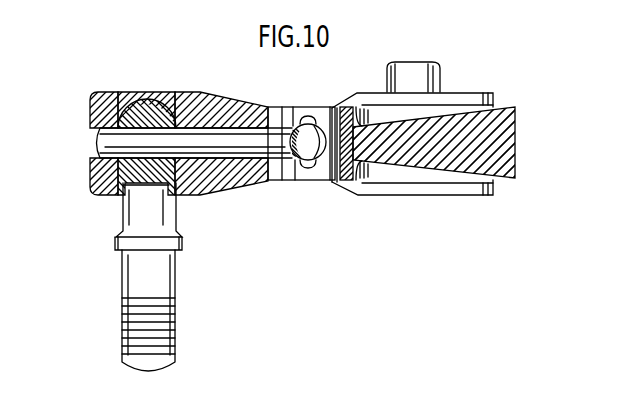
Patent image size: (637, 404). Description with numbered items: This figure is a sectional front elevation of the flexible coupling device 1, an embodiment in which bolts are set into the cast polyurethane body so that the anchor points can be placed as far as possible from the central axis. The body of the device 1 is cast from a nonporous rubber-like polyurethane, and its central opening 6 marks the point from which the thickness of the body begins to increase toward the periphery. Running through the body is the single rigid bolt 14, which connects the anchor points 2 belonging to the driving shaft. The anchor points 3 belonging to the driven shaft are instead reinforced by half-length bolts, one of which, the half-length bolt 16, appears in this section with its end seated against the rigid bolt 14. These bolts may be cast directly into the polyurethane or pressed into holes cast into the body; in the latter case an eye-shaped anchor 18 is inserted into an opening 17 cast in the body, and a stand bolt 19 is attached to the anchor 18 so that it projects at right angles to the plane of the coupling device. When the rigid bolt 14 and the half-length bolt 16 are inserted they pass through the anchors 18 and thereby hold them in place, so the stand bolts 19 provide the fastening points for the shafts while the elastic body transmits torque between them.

The flexible coupling device 1 is at (516, 143).
The anchor points for the driving shaft 2 is at (90, 106).
The anchor points for the driven shaft 3 is at (450, 98).
The central opening 6 is at (274, 120).
The rigid bolt 14 is at (106, 140).
The half-length bolt 16 is at (317, 122).
The opening 17 is at (132, 98).
The eye-shaped anchor 18 is at (152, 108).
The stand bolt 19 is at (437, 62).